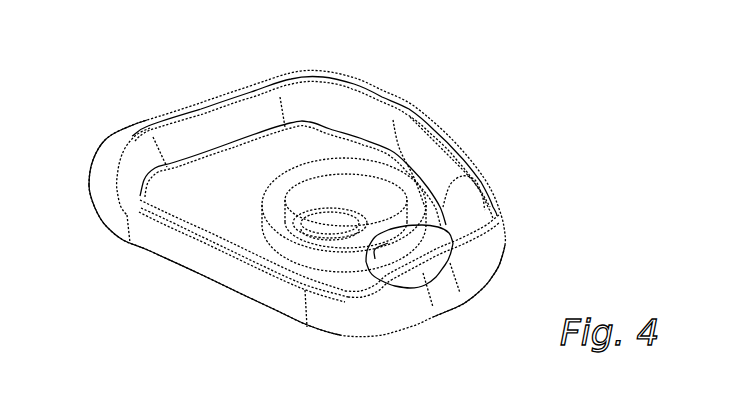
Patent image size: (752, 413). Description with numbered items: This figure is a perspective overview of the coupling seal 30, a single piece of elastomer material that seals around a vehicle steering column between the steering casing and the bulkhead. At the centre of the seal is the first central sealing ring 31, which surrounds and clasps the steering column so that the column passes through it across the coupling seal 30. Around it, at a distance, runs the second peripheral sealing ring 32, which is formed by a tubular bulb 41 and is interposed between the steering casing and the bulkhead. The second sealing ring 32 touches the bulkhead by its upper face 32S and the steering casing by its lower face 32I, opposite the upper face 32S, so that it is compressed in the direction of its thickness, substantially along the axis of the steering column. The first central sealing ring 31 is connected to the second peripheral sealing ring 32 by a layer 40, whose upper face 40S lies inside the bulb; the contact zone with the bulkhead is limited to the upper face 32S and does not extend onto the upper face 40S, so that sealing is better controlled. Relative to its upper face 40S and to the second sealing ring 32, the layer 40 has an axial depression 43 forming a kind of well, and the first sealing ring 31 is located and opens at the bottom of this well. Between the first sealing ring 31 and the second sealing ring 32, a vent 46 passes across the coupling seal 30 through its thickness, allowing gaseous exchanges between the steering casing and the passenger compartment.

The coupling seal 30 is at (517, 192).
The first central sealing ring 31 is at (363, 217).
The second peripheral sealing ring 32 is at (425, 110).
The upper face 32S is at (128, 140).
The lower face 32I is at (125, 243).
The layer 40 is at (223, 170).
The upper face of the layer 40S is at (200, 195).
The tubular bulb 41 is at (363, 115).
The axial depression 43 is at (333, 193).
The vent 46 is at (410, 248).